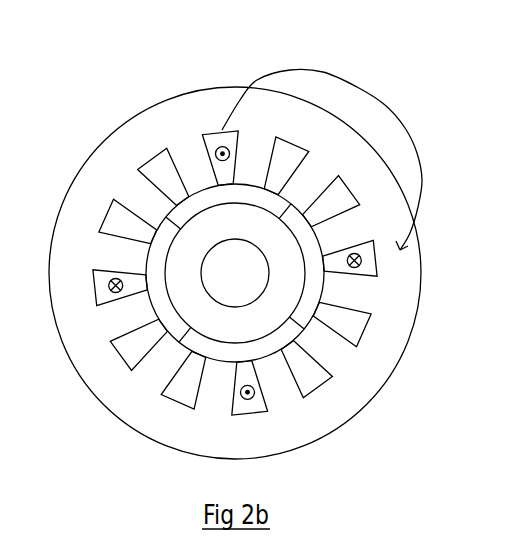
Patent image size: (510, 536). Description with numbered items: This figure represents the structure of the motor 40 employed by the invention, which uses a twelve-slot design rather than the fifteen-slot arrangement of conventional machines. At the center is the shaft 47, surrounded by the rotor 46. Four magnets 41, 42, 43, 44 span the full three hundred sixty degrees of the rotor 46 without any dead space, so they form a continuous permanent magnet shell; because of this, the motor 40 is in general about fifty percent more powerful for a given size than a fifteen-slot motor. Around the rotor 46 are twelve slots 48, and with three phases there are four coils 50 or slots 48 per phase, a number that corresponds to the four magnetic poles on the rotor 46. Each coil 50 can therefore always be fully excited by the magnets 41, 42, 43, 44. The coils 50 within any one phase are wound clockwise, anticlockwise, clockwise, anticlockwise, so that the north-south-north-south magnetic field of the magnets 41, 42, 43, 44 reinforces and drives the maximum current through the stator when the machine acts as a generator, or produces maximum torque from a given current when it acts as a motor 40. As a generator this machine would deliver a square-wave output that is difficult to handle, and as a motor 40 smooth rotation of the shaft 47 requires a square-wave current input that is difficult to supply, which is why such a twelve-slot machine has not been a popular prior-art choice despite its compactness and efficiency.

The motor 40 is at (468, 282).
The magnet 41 is at (158, 307).
The magnet 42 is at (207, 198).
The magnet 43 is at (317, 289).
The magnet 44 is at (262, 347).
The rotor 46 is at (301, 283).
The shaft 47 is at (250, 286).
The slot 48 is at (213, 140).
The coil 50 is at (377, 92).